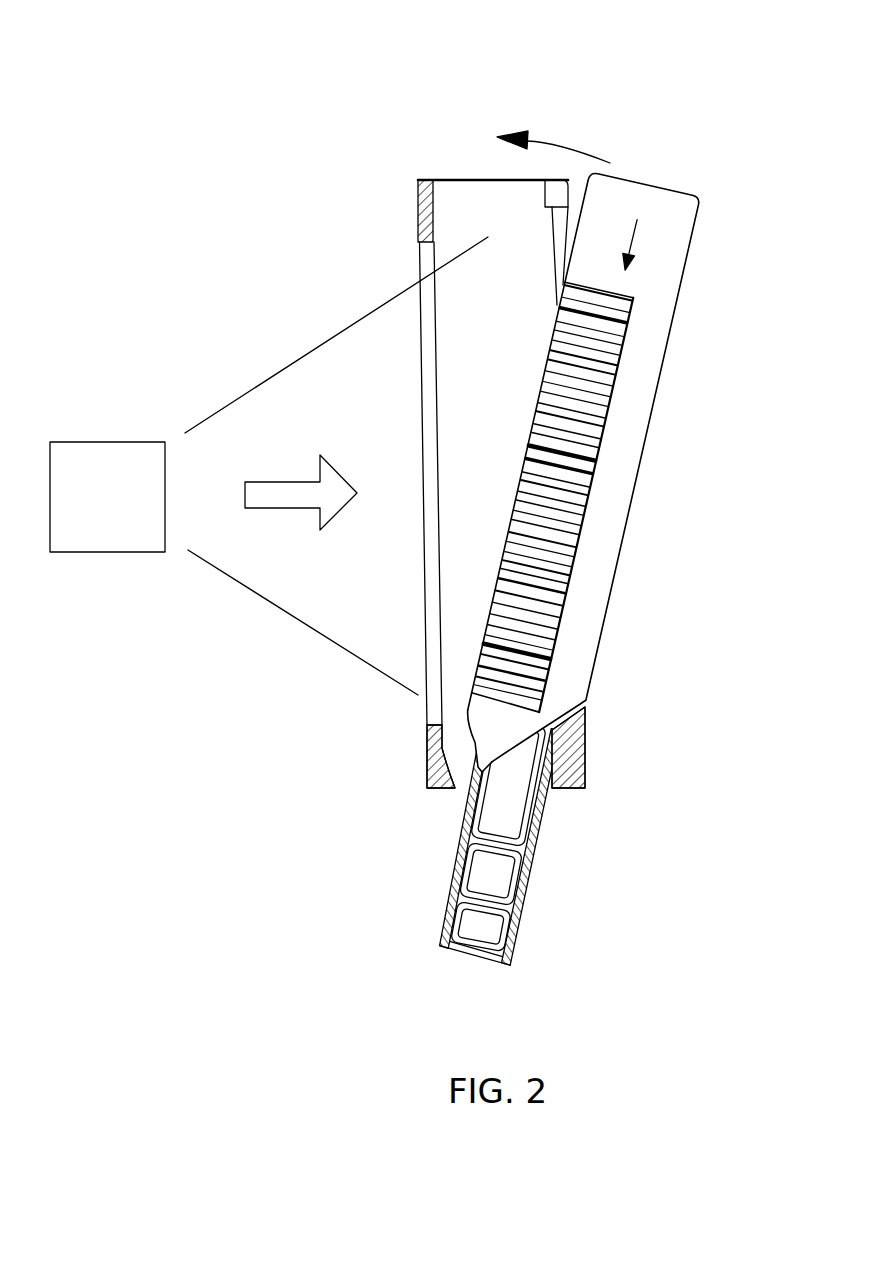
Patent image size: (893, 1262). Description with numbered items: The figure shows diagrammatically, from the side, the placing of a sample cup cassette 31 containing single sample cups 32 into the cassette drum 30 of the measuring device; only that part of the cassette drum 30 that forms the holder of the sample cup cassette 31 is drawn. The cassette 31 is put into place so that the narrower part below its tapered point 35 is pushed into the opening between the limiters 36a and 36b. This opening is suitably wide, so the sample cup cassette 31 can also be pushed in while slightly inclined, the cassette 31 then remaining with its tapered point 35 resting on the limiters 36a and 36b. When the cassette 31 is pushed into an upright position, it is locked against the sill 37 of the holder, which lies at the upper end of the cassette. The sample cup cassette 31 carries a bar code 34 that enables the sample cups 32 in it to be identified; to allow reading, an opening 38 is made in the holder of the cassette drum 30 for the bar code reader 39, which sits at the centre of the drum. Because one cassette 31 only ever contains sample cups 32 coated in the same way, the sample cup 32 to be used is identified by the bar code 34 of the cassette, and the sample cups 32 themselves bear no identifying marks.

The cassette drum 30 is at (417, 212).
The sample cup cassette 31 is at (630, 450).
The sample cups 32 is at (456, 957).
The bar code 34 is at (600, 388).
The tapered point 35 is at (462, 742).
The limiter 36a is at (432, 790).
The limiter 36b is at (572, 790).
The sill 37 is at (545, 183).
The opening 38 is at (420, 383).
The bar code reader 39 is at (95, 462).